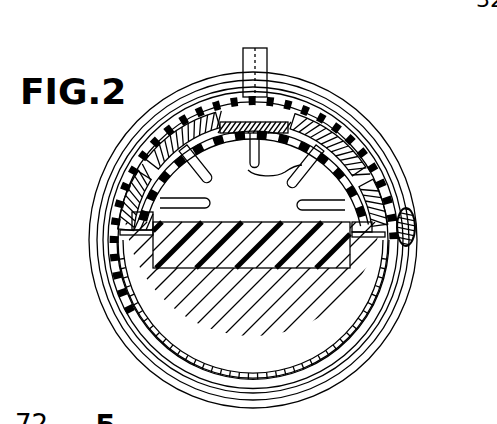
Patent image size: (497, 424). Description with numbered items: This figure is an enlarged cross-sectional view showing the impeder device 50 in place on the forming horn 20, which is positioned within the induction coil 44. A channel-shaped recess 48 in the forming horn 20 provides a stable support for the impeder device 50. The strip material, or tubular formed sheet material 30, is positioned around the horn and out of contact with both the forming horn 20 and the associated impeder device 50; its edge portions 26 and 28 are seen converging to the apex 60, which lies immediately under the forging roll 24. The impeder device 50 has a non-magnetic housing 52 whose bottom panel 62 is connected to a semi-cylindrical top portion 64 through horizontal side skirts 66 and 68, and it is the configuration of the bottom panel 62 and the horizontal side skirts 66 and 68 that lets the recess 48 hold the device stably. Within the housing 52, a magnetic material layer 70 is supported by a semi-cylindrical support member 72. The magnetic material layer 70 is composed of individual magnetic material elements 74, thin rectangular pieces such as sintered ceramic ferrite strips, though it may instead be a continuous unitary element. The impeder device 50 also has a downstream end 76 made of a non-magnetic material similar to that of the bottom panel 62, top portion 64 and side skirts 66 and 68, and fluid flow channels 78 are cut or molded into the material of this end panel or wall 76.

The forming horn 20 is at (333, 327).
The forging roll 24 is at (262, 55).
The edge portion 26 is at (273, 104).
The edge portion 28 is at (247, 100).
The tubular formed sheet material 30 is at (270, 385).
The induction coil 44 is at (372, 142).
The recess 48 is at (170, 270).
The impeder device 50 is at (337, 128).
The non-magnetic housing 52 is at (150, 243).
The apex 60 is at (265, 100).
The bottom panel 62 is at (180, 350).
The top portion 64 is at (157, 147).
The horizontal side skirt 66 is at (367, 243).
The horizontal side skirt 68 is at (127, 240).
The magnetic material layer 70 is at (152, 182).
The semi-cylindrical support member 72 is at (130, 216).
The magnetic material element 74 is at (187, 140).
The downstream end 76 is at (284, 208).
The fluid flow channel 78 is at (207, 160).